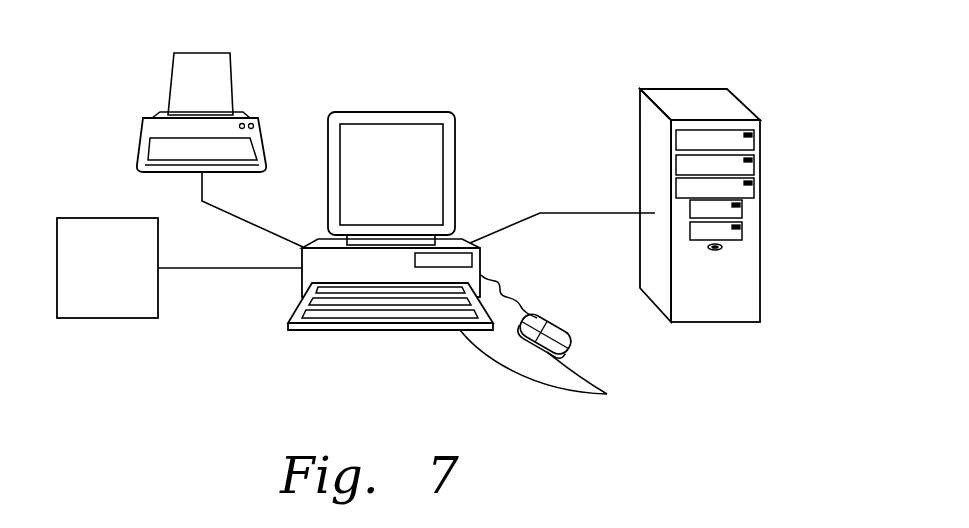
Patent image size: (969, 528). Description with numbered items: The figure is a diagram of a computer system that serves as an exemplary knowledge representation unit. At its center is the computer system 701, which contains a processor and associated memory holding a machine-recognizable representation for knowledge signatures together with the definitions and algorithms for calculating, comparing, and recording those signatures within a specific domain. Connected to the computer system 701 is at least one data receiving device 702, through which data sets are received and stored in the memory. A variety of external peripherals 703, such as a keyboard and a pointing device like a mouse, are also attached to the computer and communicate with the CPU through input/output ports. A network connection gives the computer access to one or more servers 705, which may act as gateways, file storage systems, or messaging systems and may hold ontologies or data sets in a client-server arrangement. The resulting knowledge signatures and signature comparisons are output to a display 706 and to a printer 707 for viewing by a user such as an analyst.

The computer system 701 is at (303, 287).
The data receiving device 702 is at (138, 286).
The external peripherals 703 is at (482, 344).
The server 705 is at (657, 128).
The display 706 is at (422, 190).
The printer 707 is at (142, 135).